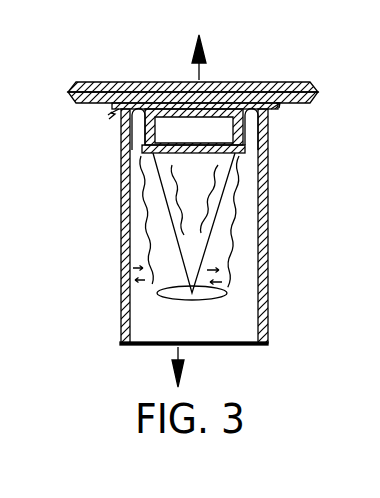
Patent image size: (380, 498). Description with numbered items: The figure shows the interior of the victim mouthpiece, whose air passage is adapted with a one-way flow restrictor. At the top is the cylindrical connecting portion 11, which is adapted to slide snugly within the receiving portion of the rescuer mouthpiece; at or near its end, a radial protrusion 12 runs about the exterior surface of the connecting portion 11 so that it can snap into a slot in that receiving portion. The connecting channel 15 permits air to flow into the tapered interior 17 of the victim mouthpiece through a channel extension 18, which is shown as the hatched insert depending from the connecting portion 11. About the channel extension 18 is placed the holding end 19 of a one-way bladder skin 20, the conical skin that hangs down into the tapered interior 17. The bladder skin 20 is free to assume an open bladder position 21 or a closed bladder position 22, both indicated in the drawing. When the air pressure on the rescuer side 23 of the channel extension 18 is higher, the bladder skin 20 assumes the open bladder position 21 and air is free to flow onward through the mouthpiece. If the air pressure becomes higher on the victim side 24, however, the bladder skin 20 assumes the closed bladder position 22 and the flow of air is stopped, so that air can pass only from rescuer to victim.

The connecting portion 11 is at (202, 76).
The radial protrusion 12 is at (316, 91).
The connecting channel 15 is at (236, 81).
The tapered interior 17 is at (206, 338).
The channel extension 18 is at (226, 131).
The holding end 19 is at (141, 149).
The one-way bladder skin 20 is at (210, 233).
The open bladder position 21 is at (227, 289).
The closed bladder position 22 is at (186, 221).
The rescuer side 23 is at (198, 45).
The victim side 24 is at (195, 347).